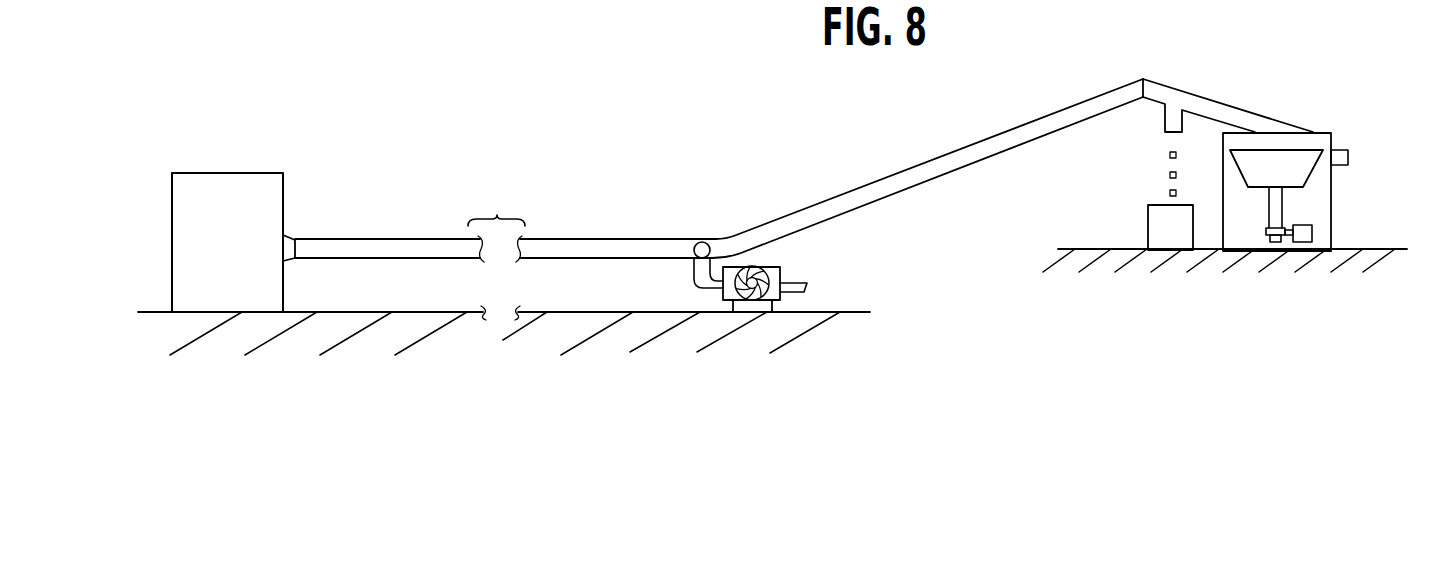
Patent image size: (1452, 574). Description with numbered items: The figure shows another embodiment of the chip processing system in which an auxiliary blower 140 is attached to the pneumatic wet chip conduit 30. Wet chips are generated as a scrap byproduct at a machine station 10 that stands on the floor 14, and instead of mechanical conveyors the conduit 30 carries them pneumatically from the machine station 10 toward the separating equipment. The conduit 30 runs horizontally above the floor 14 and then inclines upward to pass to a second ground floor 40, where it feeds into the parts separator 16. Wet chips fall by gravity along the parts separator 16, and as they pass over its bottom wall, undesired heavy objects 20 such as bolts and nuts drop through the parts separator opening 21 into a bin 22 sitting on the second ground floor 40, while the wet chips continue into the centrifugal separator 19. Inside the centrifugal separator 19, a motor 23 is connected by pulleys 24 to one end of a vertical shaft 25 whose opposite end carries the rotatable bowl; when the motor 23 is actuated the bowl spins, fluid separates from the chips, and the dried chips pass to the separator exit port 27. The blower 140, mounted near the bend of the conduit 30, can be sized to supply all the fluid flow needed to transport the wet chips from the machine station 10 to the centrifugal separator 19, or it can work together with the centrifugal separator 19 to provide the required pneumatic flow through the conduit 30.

The machine station 10 is at (203, 200).
The floor 14 is at (362, 312).
The blower 140 is at (715, 298).
The conduit 30 is at (809, 212).
The parts separator 16 is at (1197, 99).
The parts separator opening 21 is at (1167, 139).
The heavy objects 20 is at (1168, 194).
The second ground floor 40 is at (1058, 249).
The bin 22 is at (1172, 232).
The centrifugal separator 19 is at (1317, 200).
The separator exit port 27 is at (1348, 157).
The shaft 25 is at (1263, 213).
The pulleys 24 is at (1285, 242).
The motor 23 is at (1313, 233).